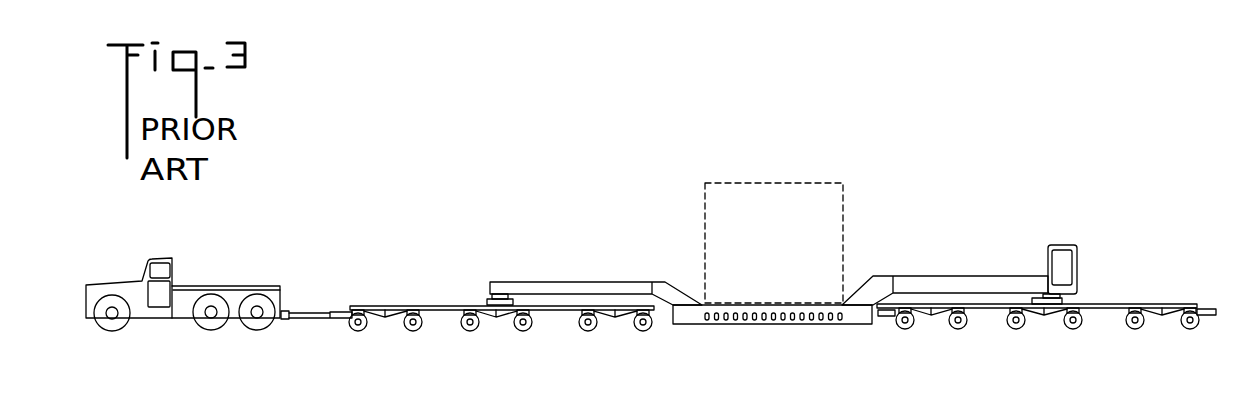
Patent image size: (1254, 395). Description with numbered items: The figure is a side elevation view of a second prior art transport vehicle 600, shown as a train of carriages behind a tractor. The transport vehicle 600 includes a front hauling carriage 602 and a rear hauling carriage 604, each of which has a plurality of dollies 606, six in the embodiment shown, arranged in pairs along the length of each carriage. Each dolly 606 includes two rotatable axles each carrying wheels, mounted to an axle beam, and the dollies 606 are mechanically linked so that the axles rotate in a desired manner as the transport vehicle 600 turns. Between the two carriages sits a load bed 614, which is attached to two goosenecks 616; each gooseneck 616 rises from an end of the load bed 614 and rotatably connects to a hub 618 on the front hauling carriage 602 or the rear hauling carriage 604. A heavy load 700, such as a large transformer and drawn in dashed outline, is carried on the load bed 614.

The transport vehicle 600 is at (446, 223).
The front hauling carriage 602 is at (664, 347).
The rear hauling carriage 604 is at (1214, 345).
The dolly 606 is at (385, 316).
The load bed 614 is at (727, 312).
The gooseneck 616 is at (640, 287).
The hub 618 is at (488, 306).
The heavy load 700 is at (862, 172).